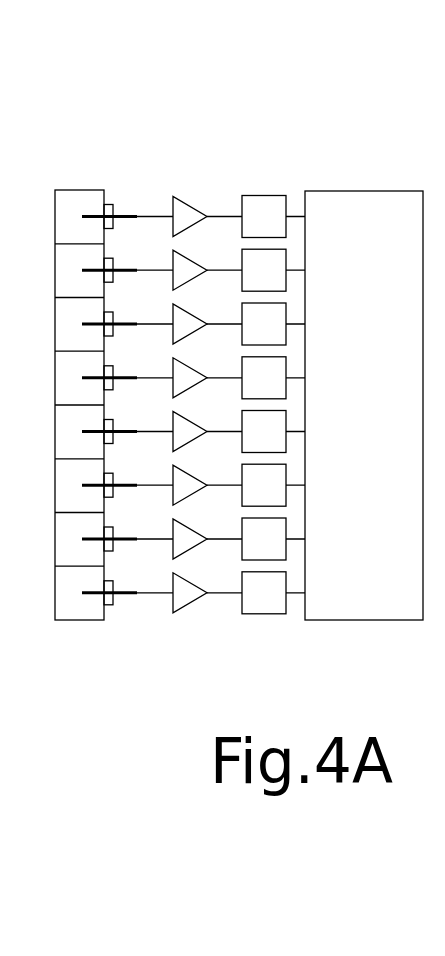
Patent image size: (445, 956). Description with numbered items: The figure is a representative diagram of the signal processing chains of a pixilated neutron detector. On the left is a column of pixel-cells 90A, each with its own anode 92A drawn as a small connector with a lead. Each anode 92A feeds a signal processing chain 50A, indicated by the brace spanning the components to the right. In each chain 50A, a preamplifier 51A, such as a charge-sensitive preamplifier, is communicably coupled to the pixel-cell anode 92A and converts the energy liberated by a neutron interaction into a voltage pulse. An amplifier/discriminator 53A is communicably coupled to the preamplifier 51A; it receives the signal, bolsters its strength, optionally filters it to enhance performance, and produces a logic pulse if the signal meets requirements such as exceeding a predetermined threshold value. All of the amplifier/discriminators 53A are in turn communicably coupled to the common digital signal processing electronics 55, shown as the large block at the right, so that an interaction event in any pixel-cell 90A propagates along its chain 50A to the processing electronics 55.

The pixel-cell 90A is at (65, 190).
The anode 92A is at (96, 213).
The signal processing chain 50A is at (425, 100).
The preamplifier 51A is at (185, 212).
The amplifier/discriminator 53A is at (260, 212).
The digital signal processing electronics 55 is at (368, 210).